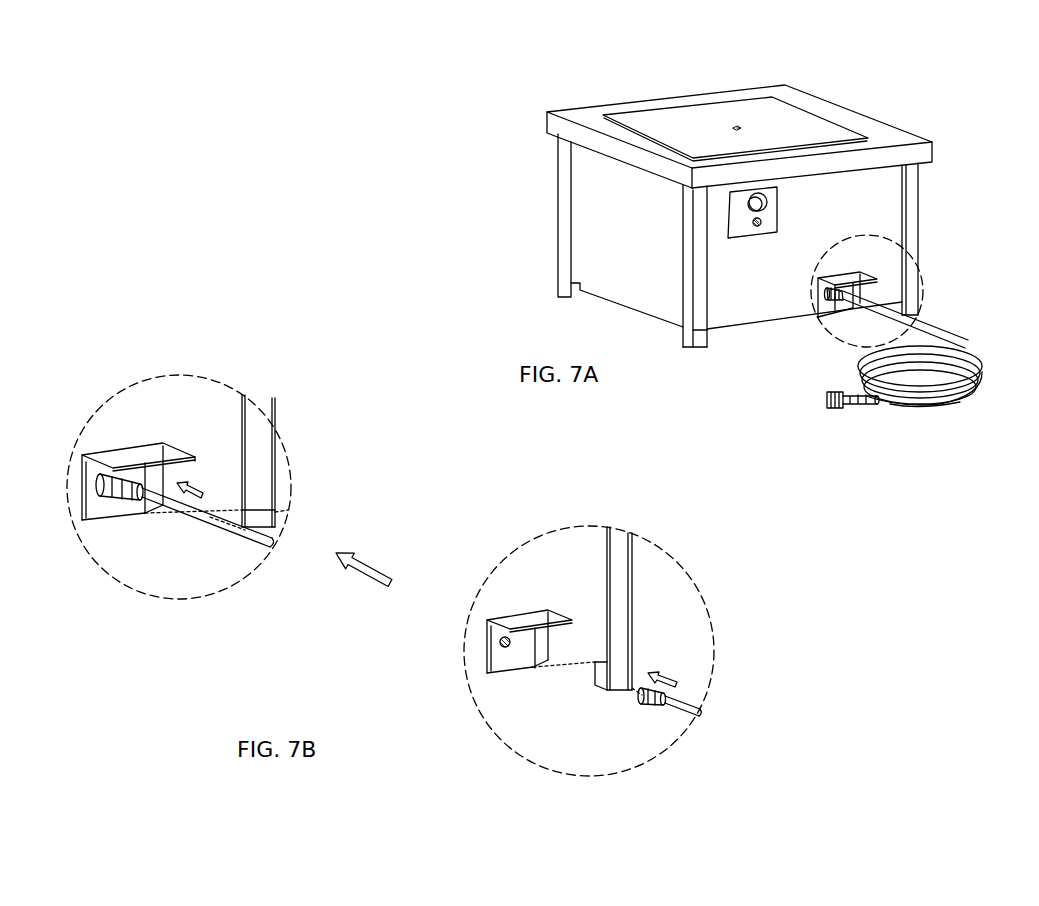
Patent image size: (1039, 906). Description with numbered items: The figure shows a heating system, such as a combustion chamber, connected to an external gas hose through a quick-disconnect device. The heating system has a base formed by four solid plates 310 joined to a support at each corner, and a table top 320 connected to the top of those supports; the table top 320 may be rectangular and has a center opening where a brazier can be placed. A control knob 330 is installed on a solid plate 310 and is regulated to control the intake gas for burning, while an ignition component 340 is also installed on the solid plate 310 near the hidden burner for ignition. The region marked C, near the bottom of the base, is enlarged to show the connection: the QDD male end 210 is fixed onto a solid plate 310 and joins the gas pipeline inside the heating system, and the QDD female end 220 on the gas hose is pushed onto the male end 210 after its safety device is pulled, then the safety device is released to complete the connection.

In FIG. 7A, the solid plate 310 is at (690, 240).
In FIG. 7A, the table top 320 is at (688, 113).
In FIG. 7A, the control knob 330 is at (857, 144).
In FIG. 7A, the ignition component 340 is at (881, 187).
In FIG. 7A, the part C is at (818, 318).
In FIG. 7B, the QDD male end 210 is at (452, 668).
In FIG. 7B, the QDD female end 220 is at (696, 720).